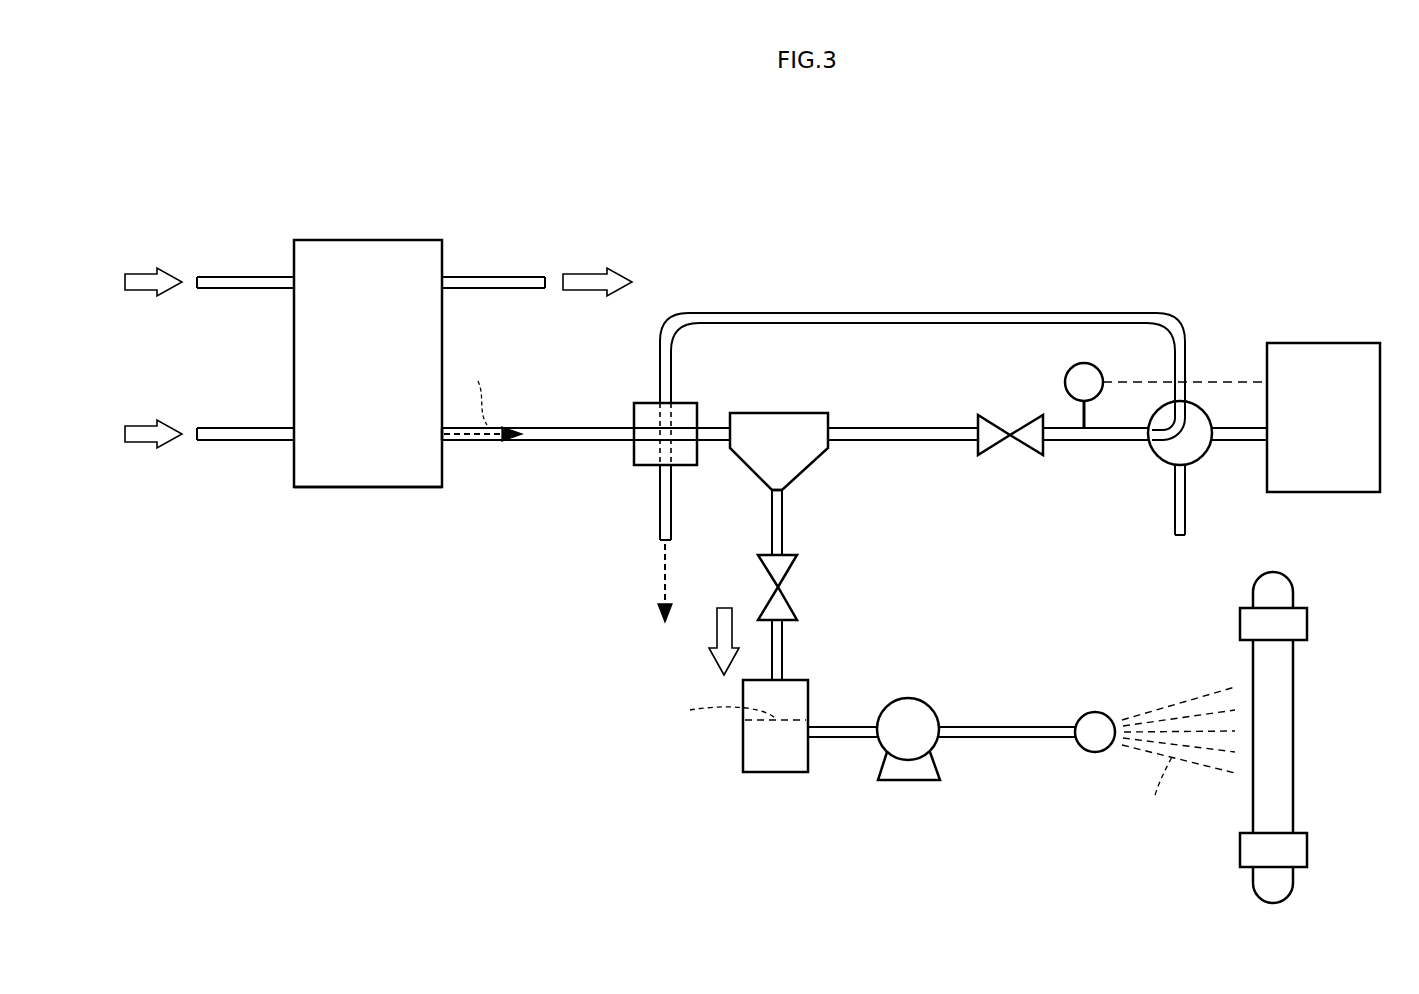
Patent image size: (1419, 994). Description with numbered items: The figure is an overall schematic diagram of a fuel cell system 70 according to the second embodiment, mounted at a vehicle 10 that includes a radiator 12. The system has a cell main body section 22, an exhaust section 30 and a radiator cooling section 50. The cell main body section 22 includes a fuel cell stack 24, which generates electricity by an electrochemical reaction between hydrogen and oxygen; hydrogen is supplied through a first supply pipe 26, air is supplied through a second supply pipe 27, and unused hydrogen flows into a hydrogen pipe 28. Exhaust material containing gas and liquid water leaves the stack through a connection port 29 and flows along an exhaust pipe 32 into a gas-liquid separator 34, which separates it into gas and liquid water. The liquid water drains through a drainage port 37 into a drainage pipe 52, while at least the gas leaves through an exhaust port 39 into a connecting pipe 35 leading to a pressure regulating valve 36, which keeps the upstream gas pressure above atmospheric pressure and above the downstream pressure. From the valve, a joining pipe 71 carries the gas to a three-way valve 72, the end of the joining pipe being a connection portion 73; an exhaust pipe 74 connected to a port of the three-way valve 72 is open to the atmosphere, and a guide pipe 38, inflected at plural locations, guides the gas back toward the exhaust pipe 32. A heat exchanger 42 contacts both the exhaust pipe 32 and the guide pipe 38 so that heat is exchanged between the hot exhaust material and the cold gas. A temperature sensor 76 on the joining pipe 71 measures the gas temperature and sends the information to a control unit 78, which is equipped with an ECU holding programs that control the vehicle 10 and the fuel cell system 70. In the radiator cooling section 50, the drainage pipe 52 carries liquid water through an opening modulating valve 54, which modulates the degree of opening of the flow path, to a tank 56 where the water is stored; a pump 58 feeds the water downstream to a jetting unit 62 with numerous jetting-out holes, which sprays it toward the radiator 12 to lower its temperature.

The vehicle 10 is at (1373, 165).
The radiator 12 is at (1295, 700).
The cell main body section 22 is at (384, 210).
The fuel cell stack 24 is at (368, 489).
The first supply pipe 26 is at (236, 276).
The second supply pipe 27 is at (246, 441).
The hydrogen pipe 28 is at (497, 276).
The connection port 29 is at (450, 441).
The exhaust section 30 is at (1028, 300).
The exhaust pipe 32 is at (582, 441).
The gas-liquid separator 34 is at (822, 467).
The connecting pipe 35 is at (903, 442).
The pressure regulating valve 36 is at (1023, 455).
The drainage port 37 is at (773, 492).
The guide pipe 38 is at (890, 310).
The exhaust port 39 is at (840, 430).
The heat exchanger 42 is at (690, 401).
The radiator cooling section 50 is at (900, 641).
The drainage pipe 52 is at (771, 516).
The opening modulating valve 54 is at (798, 570).
The tank 56 is at (772, 775).
The pump 58 is at (923, 701).
The jetting unit 62 is at (1095, 710).
The fuel cell system 70 is at (1313, 248).
The joining pipe 71 is at (1068, 443).
The three-way valve 72 is at (1210, 461).
The connection portion 73 is at (1150, 456).
The exhaust pipe 74 is at (1174, 508).
The temperature sensor 76 is at (1064, 381).
The control unit 78 is at (1327, 342).